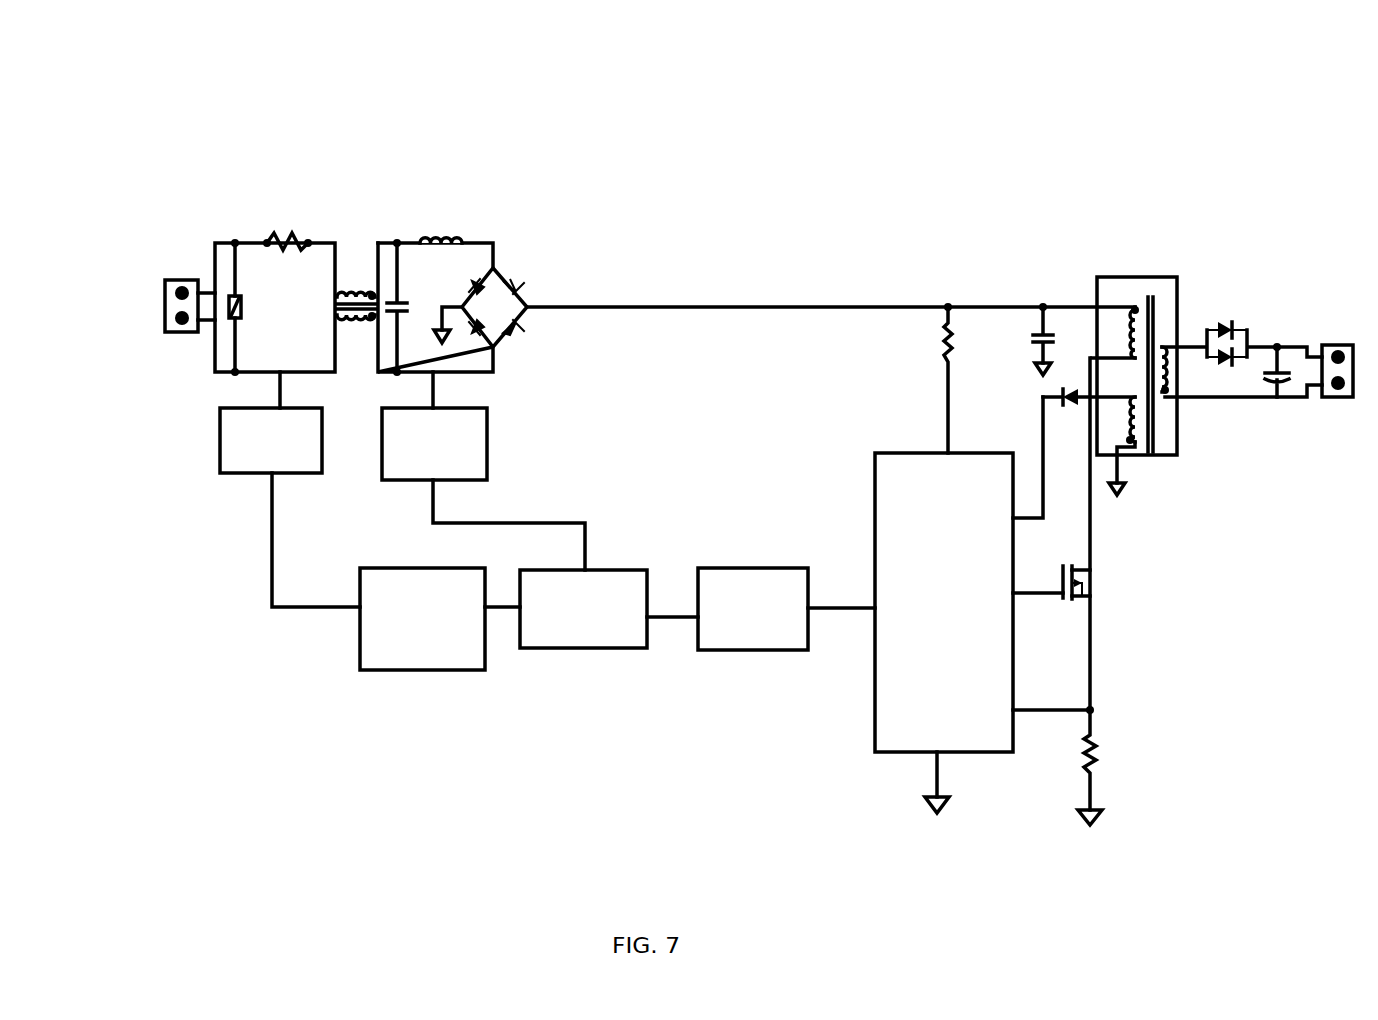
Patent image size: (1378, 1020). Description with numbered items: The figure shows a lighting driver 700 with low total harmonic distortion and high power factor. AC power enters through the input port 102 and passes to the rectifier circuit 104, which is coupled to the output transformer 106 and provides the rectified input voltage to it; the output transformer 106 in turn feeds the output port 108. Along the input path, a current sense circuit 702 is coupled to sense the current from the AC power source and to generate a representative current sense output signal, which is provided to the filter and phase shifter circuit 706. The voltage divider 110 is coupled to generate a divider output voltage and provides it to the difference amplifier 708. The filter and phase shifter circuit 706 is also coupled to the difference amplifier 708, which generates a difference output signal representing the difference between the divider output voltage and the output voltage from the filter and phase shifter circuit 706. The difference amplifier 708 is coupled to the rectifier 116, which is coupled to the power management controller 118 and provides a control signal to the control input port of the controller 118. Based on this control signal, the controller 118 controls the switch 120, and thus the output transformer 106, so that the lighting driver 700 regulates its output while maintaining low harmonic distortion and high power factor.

The lighting driver 700 is at (192, 124).
The input port 102 is at (185, 282).
The rectifier circuit 104 is at (518, 295).
The output transformer 106 is at (1133, 275).
The output port 108 is at (1335, 343).
The voltage divider 110 is at (487, 440).
The rectifier 116 is at (762, 568).
The power management controller 118 is at (890, 450).
The switch 120 is at (1092, 585).
The current sense circuit 702 is at (220, 450).
The filter and phase shifter circuit 706 is at (360, 652).
The difference amplifier 708 is at (583, 650).